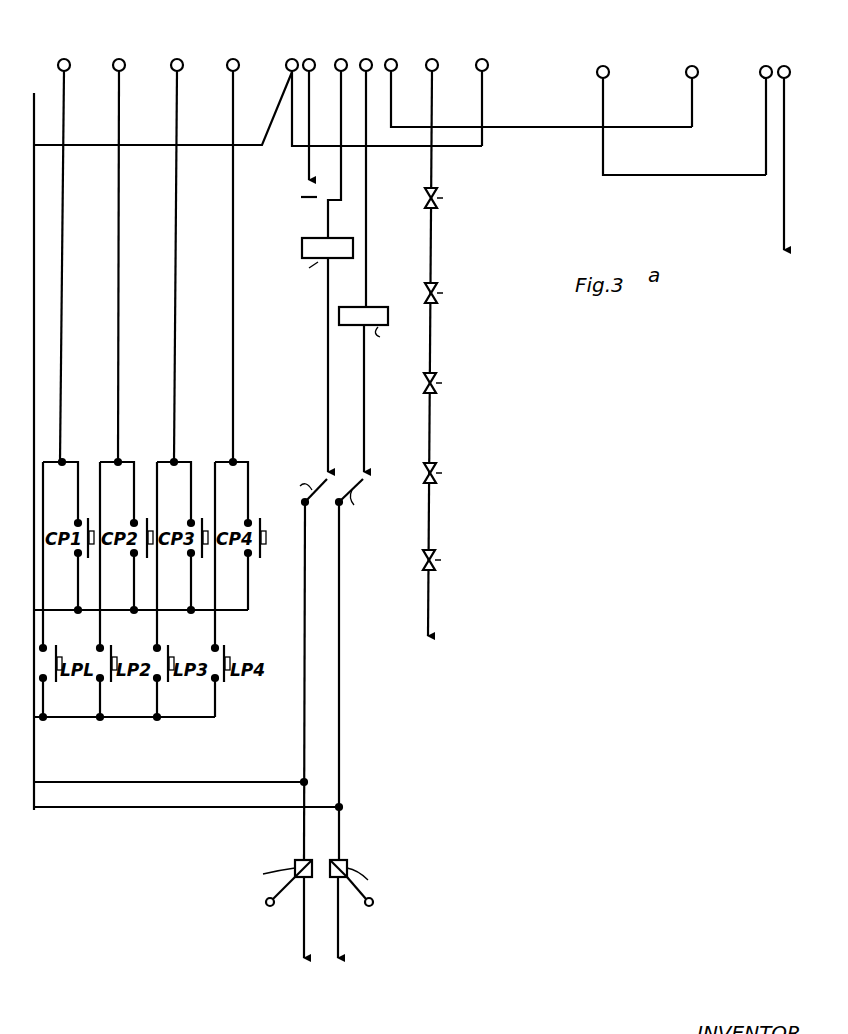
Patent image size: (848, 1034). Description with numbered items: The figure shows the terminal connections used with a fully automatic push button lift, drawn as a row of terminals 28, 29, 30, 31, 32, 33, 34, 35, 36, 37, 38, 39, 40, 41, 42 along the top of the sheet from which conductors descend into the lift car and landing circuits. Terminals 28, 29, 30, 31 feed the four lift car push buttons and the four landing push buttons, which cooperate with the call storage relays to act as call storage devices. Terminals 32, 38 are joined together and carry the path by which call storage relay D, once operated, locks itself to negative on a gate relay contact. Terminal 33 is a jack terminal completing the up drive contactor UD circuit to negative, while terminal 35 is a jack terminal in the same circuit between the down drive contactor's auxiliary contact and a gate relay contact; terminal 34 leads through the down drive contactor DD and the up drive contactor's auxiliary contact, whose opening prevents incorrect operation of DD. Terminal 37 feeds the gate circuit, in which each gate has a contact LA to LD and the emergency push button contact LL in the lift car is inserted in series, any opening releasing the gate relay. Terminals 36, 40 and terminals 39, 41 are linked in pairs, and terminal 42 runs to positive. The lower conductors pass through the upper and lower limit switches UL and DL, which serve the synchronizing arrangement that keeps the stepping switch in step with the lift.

The terminal 28 is at (65, 58).
The terminal 29 is at (122, 248).
The terminal 30 is at (177, 58).
The terminal 31 is at (235, 248).
The terminal 32 is at (291, 58).
The jack terminals 33 is at (313, 116).
The terminal 34 is at (341, 58).
The jack terminals 35 is at (365, 514).
The terminal 36 is at (392, 58).
The terminal 37 is at (442, 354).
The terminal 38 is at (482, 58).
The terminal 39 is at (679, 106).
The terminal 40 is at (692, 66).
The terminal 41 is at (763, 109).
The terminal 42 is at (785, 66).